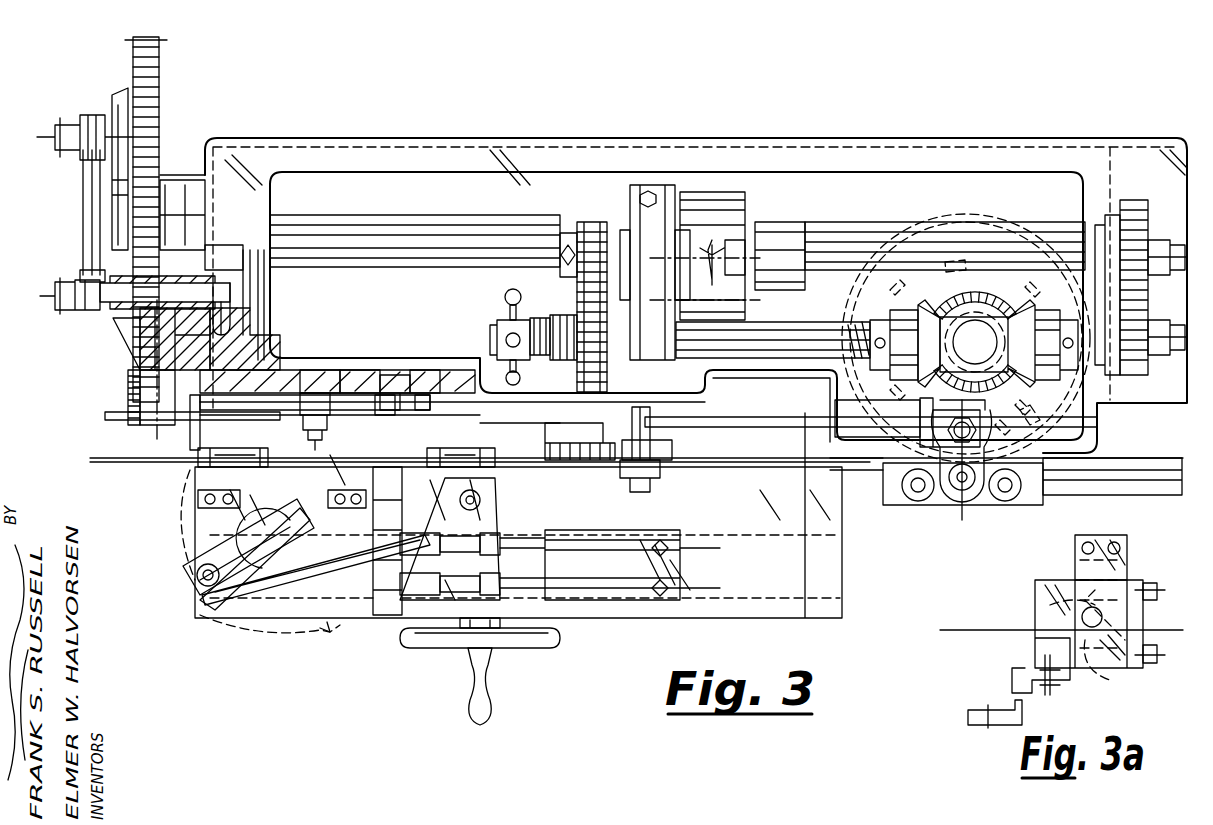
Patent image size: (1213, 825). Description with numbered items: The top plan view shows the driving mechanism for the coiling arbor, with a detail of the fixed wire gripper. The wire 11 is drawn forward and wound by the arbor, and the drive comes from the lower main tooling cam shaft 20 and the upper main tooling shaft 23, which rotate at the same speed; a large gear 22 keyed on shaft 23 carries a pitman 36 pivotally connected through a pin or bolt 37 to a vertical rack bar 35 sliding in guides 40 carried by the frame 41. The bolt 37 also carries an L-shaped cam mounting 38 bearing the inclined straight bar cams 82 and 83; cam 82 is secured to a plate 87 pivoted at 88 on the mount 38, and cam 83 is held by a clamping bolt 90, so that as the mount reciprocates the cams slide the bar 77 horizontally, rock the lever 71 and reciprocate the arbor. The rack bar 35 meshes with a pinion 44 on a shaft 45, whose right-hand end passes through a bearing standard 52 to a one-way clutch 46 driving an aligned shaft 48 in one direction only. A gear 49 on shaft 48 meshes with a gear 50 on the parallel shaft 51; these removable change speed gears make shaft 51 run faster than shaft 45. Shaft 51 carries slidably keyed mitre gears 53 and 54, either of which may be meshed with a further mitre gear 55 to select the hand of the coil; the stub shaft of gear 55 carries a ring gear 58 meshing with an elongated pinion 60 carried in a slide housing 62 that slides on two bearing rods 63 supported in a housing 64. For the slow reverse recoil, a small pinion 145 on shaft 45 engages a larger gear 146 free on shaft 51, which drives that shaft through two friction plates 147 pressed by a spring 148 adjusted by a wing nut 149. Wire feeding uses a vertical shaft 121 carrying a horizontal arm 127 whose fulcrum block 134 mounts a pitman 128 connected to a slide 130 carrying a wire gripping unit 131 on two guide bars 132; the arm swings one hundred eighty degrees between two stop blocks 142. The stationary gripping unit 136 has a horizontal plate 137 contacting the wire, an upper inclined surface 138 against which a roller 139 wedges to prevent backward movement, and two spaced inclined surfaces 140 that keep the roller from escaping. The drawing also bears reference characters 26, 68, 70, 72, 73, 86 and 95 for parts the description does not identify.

In FIG. 3, the wire 11 is at (138, 462).
In FIG. 3a, the wire 11 is at (1018, 628).
In FIG. 3, the main tooling cam shaft 20 is at (1096, 480).
In FIG. 3, the large gear 22 is at (126, 385).
In FIG. 3, the upper main tooling shaft 23 is at (388, 214).
In FIG. 3, the handle 26 is at (525, 645).
In FIG. 3, the rack bar 35 is at (135, 335).
In FIG. 3, the pitman 36 is at (85, 205).
In FIG. 3, the through pin or bolt 37 is at (52, 293).
In FIG. 3, the L-shaped cam mounting 38 is at (205, 285).
In FIG. 3, the guides 40 is at (125, 322).
In FIG. 3, the frame 41 is at (270, 325).
In FIG. 3, the pinion 44 is at (168, 200).
In FIG. 3, the shaft 45 is at (340, 262).
In FIG. 3, the one-way clutch 46 is at (722, 192).
In FIG. 3, the shaft 48 is at (870, 238).
In FIG. 3, the gear 49 is at (1148, 215).
In FIG. 3, the gear 50 is at (1140, 380).
In FIG. 3, the shaft 51 is at (490, 342).
In FIG. 3, the standard 52 is at (608, 340).
In FIG. 3, the mitre gear 53 is at (910, 305).
In FIG. 3, the mitre gear 54 is at (1012, 310).
In FIG. 3, the mitre gear 55 is at (985, 385).
In FIG. 3, the ring gear 58 is at (1040, 430).
In FIG. 3, the elongated pinion 60 is at (950, 500).
In FIG. 3, the slide housing 62 is at (960, 505).
In FIG. 3, the bearing rods 63 is at (908, 503).
In FIG. 3, the housing 64 is at (995, 505).
In FIG. 3, the arm 68 is at (990, 432).
In FIG. 3, the pivot 70 is at (975, 420).
In FIG. 3, the lever 71 is at (790, 425).
In FIG. 3, the bracket 72 is at (658, 410).
In FIG. 3, the block 73 is at (602, 457).
In FIG. 3, the slide bar 77 is at (386, 410).
In FIG. 3, the bar cam 82 is at (185, 420).
In FIG. 3, the cam bar 83 is at (430, 405).
In FIG. 3, the screw 86 is at (297, 413).
In FIG. 3, the plate 87 is at (360, 370).
In FIG. 3, the pivot 88 is at (318, 370).
In FIG. 3, the clamping bolt 90 is at (400, 375).
In FIG. 3, the detent 95 is at (1032, 418).
In FIG. 3, the vertical shaft 121 is at (315, 523).
In FIG. 3, the horizontal arm 127 is at (185, 556).
In FIG. 3, the pitman 128 is at (316, 570).
In FIG. 3, the slide 130 is at (495, 510).
In FIG. 3, the wire gripping unit 131 is at (440, 448).
In FIG. 3, the guide bars 132 is at (605, 555).
In FIG. 3, the fulcrum block 134 is at (197, 582).
In FIG. 3, the stationary gripping unit 136 is at (200, 468).
In FIG. 3a, the stationary gripping unit 136 is at (1035, 585).
In FIG. 3a, the horizontal plate 137 is at (1100, 678).
In FIG. 3a, the inclined surface 138 is at (1145, 612).
In FIG. 3a, the roller 139 is at (1035, 605).
In FIG. 3a, the inclined surfaces 140 is at (1082, 600).
In FIG. 3, the stop blocks 142 is at (198, 498).
In FIG. 3, the small pinion 145 is at (588, 228).
In FIG. 3, the gear 146 is at (575, 287).
In FIG. 3, the friction plates 147 is at (572, 305).
In FIG. 3, the spring 148 is at (535, 328).
In FIG. 3, the wing nut 149 is at (505, 313).